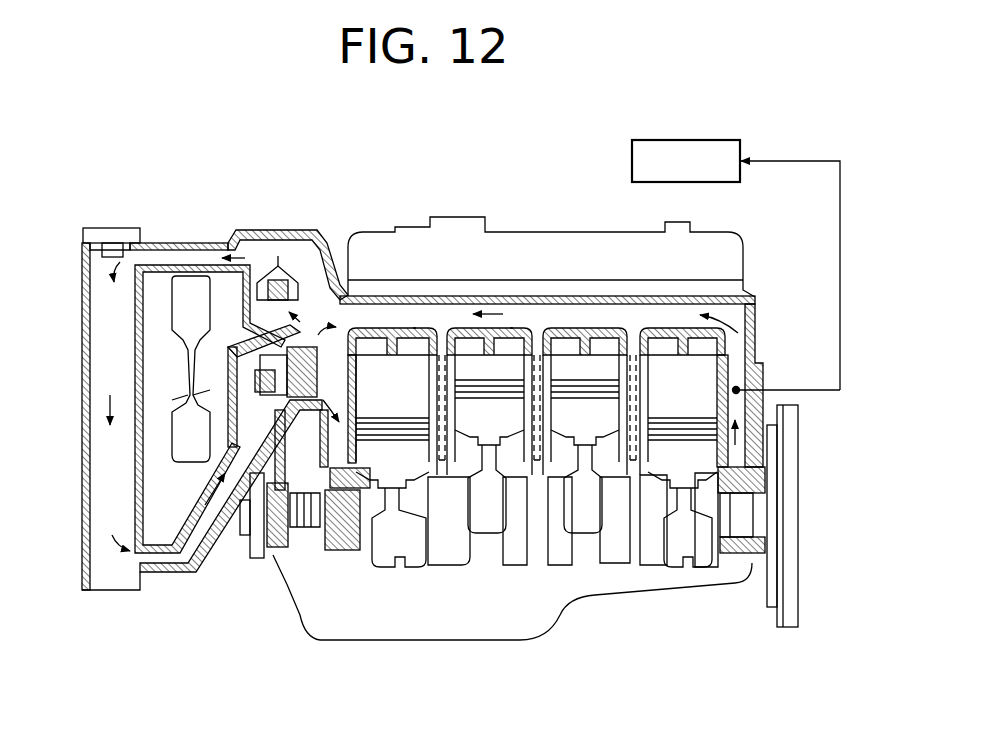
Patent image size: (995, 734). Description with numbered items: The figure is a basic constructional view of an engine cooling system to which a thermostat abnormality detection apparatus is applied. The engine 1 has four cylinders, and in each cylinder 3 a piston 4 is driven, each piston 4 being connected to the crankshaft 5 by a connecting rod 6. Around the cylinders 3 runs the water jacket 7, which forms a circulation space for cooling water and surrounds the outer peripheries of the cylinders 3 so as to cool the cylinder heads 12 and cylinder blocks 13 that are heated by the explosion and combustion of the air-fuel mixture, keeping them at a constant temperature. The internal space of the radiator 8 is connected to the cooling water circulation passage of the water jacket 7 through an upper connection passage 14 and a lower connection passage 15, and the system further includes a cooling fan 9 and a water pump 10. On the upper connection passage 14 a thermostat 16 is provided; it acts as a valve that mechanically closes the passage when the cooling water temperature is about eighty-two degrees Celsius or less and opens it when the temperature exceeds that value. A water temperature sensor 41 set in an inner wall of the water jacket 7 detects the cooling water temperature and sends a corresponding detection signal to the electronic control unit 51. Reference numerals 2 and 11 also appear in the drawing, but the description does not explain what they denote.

The engine 1 is at (313, 612).
The internal combustion engine 2 is at (197, 178).
The cylinder 3 is at (357, 372).
The piston 4 is at (401, 470).
The crankshaft 5 is at (732, 527).
The connecting rod 6 is at (400, 510).
The water jacket 7 is at (643, 332).
The radiator 8 is at (82, 360).
The cooling fan 9 is at (186, 463).
The water pump 10 is at (330, 347).
The combustion chamber 11 is at (409, 416).
The cylinder head 12 is at (413, 328).
The cylinder block 13 is at (727, 363).
The upper connection passage 14 is at (174, 243).
The lower connection passage 15 is at (162, 572).
The thermostat 16 is at (285, 235).
The water temperature sensor 41 is at (740, 390).
The electronic control unit (ECU) 51 is at (632, 160).